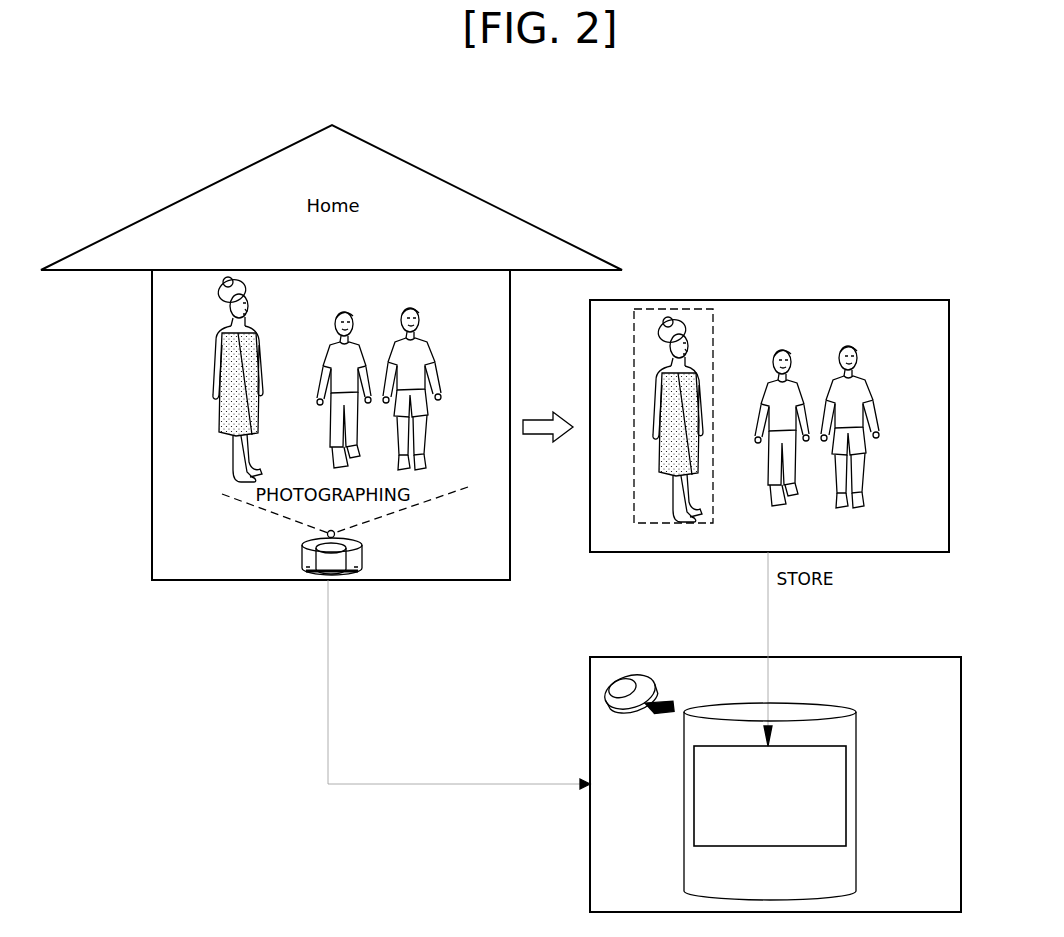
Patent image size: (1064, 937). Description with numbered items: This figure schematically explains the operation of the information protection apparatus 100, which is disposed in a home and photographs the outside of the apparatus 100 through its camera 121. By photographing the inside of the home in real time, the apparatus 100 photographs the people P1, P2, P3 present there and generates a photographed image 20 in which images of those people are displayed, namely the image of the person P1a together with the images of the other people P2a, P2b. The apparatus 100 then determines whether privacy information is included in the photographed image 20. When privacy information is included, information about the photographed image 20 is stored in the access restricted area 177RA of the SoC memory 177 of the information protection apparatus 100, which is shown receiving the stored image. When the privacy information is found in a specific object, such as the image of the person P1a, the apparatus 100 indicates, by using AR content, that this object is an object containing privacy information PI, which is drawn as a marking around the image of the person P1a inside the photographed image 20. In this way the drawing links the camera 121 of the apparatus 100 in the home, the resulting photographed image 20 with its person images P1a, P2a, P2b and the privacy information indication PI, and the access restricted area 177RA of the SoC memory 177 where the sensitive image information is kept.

The photographed image 20 is at (767, 299).
The information protection apparatus 100 is at (302, 547).
The camera 121 is at (322, 534).
The SoC memory 177 is at (858, 790).
The access restricted area 177RA is at (847, 827).
The person P1 is at (213, 353).
The person P2 is at (422, 440).
The person P3 is at (352, 463).
The privacy information indication PI is at (634, 324).
The image of person P1a is at (648, 388).
The image of person P2a is at (795, 476).
The image of person P2b is at (867, 387).